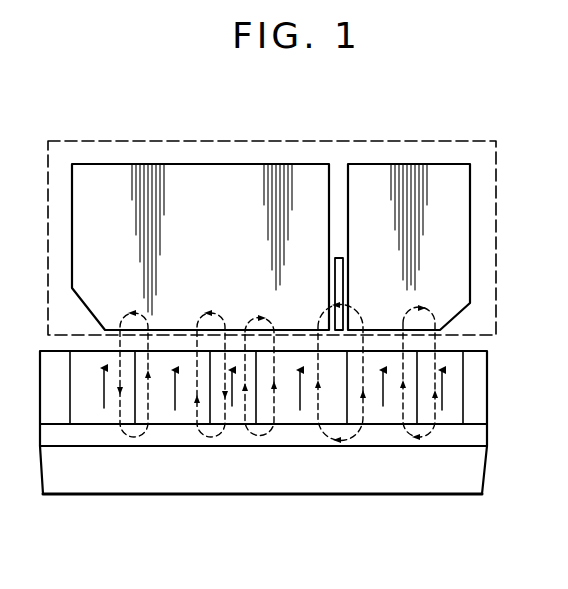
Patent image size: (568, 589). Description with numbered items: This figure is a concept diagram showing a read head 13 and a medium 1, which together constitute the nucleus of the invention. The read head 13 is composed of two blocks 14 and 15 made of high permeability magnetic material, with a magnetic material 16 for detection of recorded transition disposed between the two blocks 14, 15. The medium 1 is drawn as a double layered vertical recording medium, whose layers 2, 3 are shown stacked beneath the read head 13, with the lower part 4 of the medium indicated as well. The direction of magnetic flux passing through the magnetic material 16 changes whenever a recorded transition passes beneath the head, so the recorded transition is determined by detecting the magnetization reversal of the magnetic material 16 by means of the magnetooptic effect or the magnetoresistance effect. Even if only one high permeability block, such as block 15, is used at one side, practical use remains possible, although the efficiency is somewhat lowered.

The medium 1 is at (485, 478).
The magnetic recording layer 2 is at (475, 393).
The intermediate layer 3 is at (472, 438).
The recording medium 4 is at (458, 480).
The read head 13 is at (497, 163).
The block 14 is at (208, 178).
The block 15 is at (421, 177).
The magnetic material for detection of recorded transition 16 is at (338, 291).